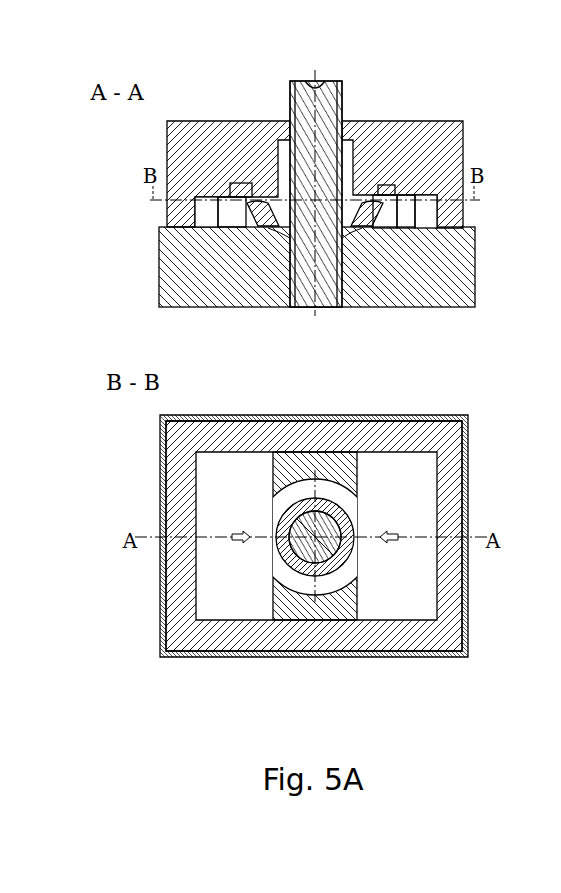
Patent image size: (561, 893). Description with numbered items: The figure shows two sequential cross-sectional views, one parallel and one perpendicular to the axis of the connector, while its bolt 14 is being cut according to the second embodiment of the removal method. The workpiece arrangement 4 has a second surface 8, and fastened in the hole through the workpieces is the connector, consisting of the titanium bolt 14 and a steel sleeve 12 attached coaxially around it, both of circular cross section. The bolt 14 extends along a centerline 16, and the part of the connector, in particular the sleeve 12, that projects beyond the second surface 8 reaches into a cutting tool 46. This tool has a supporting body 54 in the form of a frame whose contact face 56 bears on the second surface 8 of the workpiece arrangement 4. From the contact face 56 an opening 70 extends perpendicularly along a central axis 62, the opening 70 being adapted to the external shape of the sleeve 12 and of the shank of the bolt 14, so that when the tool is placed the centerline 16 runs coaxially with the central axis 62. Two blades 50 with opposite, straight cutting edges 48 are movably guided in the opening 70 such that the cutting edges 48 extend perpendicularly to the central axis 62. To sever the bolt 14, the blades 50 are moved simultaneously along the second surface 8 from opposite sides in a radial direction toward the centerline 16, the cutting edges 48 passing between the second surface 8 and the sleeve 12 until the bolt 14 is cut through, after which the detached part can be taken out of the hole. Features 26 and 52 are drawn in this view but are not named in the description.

The workpiece arrangement 4 is at (280, 267).
The second surface 8 is at (175, 228).
The sleeve 12 is at (310, 165).
The bolt 14 is at (310, 165).
The centerline 16 is at (327, 84).
The central axis 62 is at (329, 165).
The bore 26 is at (372, 262).
The cutting tool 46 is at (276, 145).
The cutting edges 48 is at (285, 232).
The blades 50 is at (208, 210).
The sealing wedge 52 is at (396, 193).
The supporting body 54 is at (276, 145).
The contact face 56 is at (175, 247).
The opening 70 is at (383, 187).